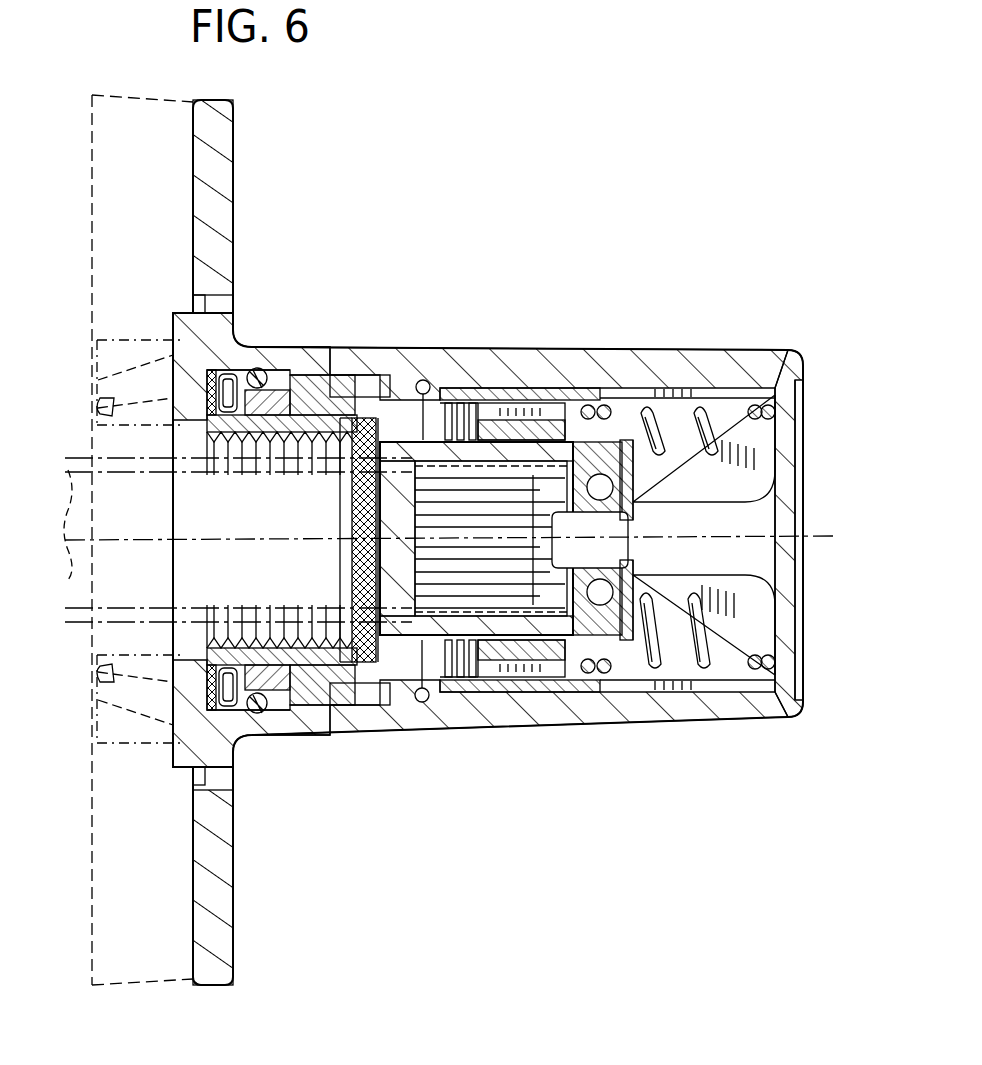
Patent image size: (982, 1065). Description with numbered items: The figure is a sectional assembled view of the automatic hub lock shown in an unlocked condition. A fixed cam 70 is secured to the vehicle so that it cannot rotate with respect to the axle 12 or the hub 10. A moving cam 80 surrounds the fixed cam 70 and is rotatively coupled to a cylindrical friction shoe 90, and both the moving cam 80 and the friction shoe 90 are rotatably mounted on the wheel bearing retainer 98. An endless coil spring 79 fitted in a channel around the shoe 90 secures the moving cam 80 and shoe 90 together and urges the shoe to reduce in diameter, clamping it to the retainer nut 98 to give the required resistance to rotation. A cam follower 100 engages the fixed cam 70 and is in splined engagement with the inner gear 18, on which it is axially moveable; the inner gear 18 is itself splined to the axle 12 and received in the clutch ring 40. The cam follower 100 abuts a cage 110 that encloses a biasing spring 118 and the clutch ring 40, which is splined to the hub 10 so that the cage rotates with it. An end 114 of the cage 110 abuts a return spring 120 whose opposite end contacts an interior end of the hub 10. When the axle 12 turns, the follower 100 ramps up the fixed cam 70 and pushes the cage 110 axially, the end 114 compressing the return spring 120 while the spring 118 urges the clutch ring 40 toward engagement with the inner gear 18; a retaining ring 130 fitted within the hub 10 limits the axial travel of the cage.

The hub 10 is at (368, 349).
The axle 12 is at (114, 540).
The inner gear 18 is at (425, 455).
The clutch ring 40 is at (540, 675).
The fixed cam 70 is at (313, 423).
The endless coil spring 79 is at (238, 730).
The moving cam 80 is at (292, 470).
The friction shoe 90 is at (265, 714).
The wheel bearing retainer 98 is at (215, 372).
The cam follower 100 is at (368, 688).
The cage 110 is at (500, 690).
The end of the cage 114 is at (590, 682).
The biasing spring 118 is at (452, 682).
The return spring 120 is at (713, 640).
The retaining ring 130 is at (423, 703).